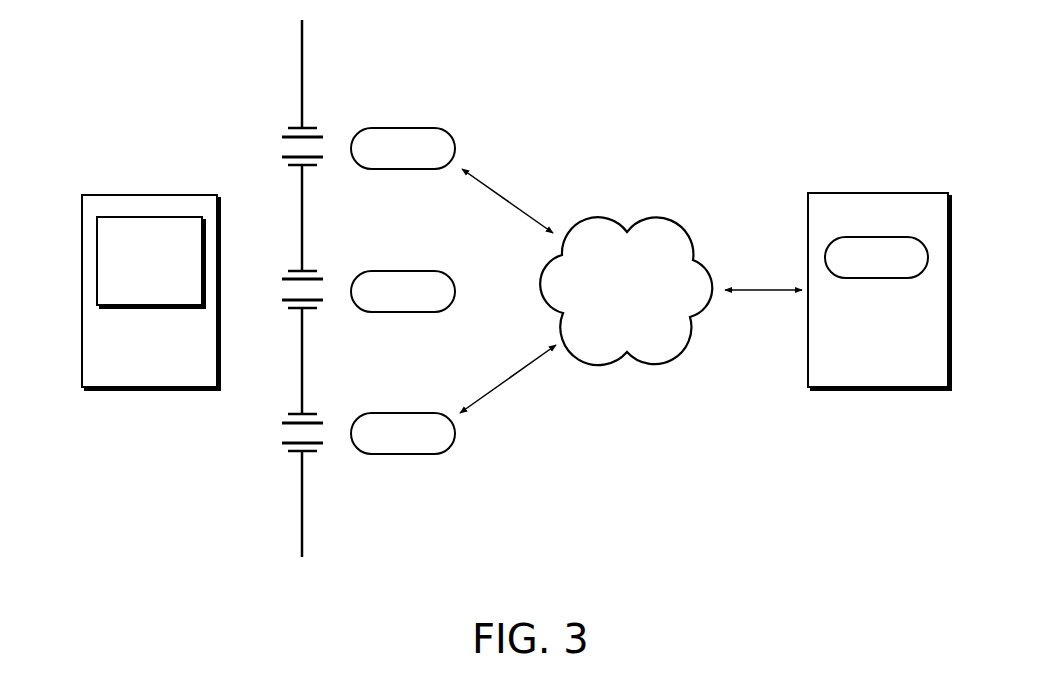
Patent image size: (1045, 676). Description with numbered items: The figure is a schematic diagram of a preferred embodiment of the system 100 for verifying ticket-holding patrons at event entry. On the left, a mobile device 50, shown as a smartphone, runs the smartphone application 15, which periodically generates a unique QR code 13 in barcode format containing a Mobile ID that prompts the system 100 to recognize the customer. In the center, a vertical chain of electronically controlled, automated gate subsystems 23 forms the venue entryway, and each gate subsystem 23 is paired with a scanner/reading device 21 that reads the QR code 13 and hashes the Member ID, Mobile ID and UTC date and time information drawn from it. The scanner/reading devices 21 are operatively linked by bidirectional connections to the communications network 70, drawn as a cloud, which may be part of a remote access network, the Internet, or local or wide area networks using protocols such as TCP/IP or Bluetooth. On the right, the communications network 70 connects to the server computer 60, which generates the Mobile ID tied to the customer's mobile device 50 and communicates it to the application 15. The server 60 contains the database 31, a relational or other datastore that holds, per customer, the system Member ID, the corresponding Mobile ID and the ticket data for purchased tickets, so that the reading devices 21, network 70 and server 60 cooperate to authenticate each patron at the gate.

The system 100 is at (647, 57).
The QR code 13 is at (97, 258).
The smartphone application 15 is at (128, 348).
The mobile device 50 is at (142, 388).
The scanner/reading device 21 is at (392, 162).
The gate subsystem 23 is at (325, 168).
The communications network 70 is at (616, 304).
The server computer 60 is at (880, 189).
The database 31 is at (865, 270).